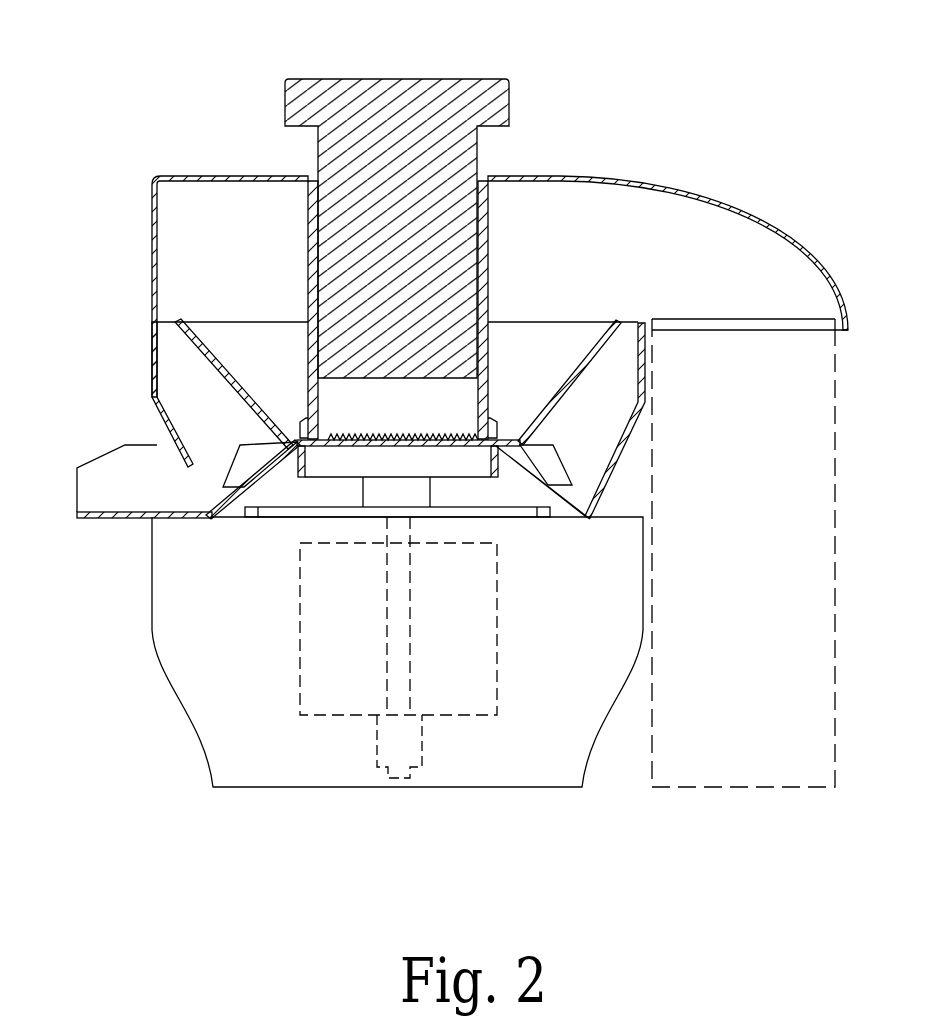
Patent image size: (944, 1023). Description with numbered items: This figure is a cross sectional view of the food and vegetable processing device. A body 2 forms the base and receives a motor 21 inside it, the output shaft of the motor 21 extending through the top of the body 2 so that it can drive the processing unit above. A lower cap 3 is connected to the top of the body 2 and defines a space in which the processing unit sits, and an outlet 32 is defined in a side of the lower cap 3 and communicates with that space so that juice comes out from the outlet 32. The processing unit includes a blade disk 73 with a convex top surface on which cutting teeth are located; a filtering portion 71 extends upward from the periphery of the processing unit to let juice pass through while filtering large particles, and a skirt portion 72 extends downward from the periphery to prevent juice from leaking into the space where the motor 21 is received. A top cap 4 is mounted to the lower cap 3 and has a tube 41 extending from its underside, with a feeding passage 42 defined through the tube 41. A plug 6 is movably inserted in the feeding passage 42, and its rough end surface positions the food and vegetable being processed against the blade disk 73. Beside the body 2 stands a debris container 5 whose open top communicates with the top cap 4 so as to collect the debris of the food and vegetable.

The body 2 is at (183, 673).
The motor 21 is at (465, 695).
The lower cap 3 is at (152, 335).
The outlet 32 is at (102, 477).
The top cap 4 is at (647, 178).
The tube 41 is at (307, 243).
The feeding passage 42 is at (345, 397).
The debris container 5 is at (813, 766).
The plug 6 is at (405, 95).
The filtering portion 71 is at (197, 348).
The skirt portion 72 is at (227, 472).
The blade disk 73 is at (330, 432).